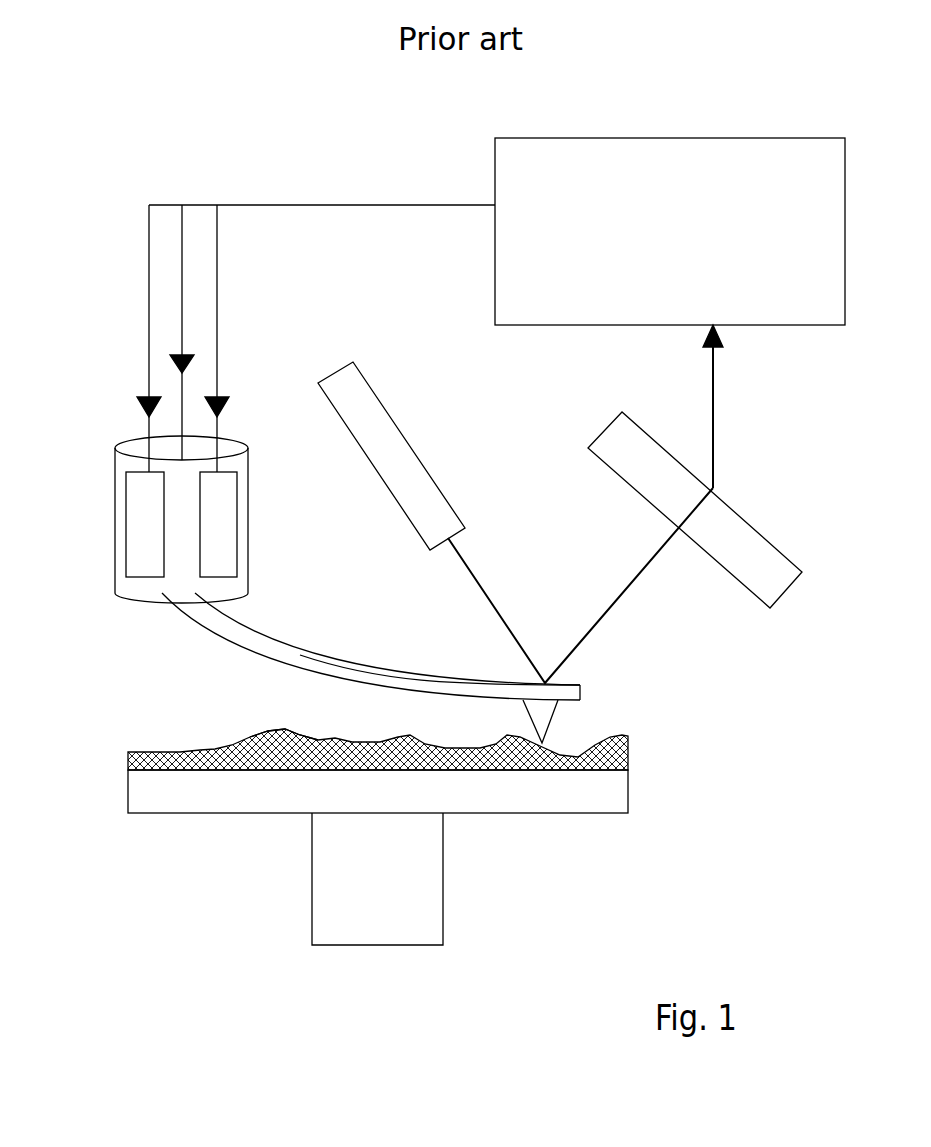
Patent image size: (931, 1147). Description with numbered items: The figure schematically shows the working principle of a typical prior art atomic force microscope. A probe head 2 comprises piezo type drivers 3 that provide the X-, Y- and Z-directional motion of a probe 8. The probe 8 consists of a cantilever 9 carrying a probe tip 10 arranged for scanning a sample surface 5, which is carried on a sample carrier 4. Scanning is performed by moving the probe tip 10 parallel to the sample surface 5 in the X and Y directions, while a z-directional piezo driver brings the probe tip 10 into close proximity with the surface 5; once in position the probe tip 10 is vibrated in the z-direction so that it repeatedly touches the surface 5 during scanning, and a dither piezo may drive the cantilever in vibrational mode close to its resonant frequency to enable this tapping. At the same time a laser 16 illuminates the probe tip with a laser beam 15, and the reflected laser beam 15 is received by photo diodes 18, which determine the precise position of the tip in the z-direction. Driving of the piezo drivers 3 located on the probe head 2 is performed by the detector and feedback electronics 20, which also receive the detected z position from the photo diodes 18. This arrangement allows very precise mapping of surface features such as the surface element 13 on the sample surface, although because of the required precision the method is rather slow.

The probe head 2 is at (115, 462).
The piezo type drivers 3 is at (145, 520).
The sample carrier 4 is at (128, 798).
The sample surface 5 is at (128, 760).
The probe 8 is at (205, 635).
The cantilever 9 is at (355, 668).
The probe tip 10 is at (550, 723).
The surface element 13 is at (300, 730).
The laser beam 15 is at (480, 582).
The laser 16 is at (382, 402).
The photo diodes 18 is at (785, 552).
The detector and feedback electronics 20 is at (691, 245).